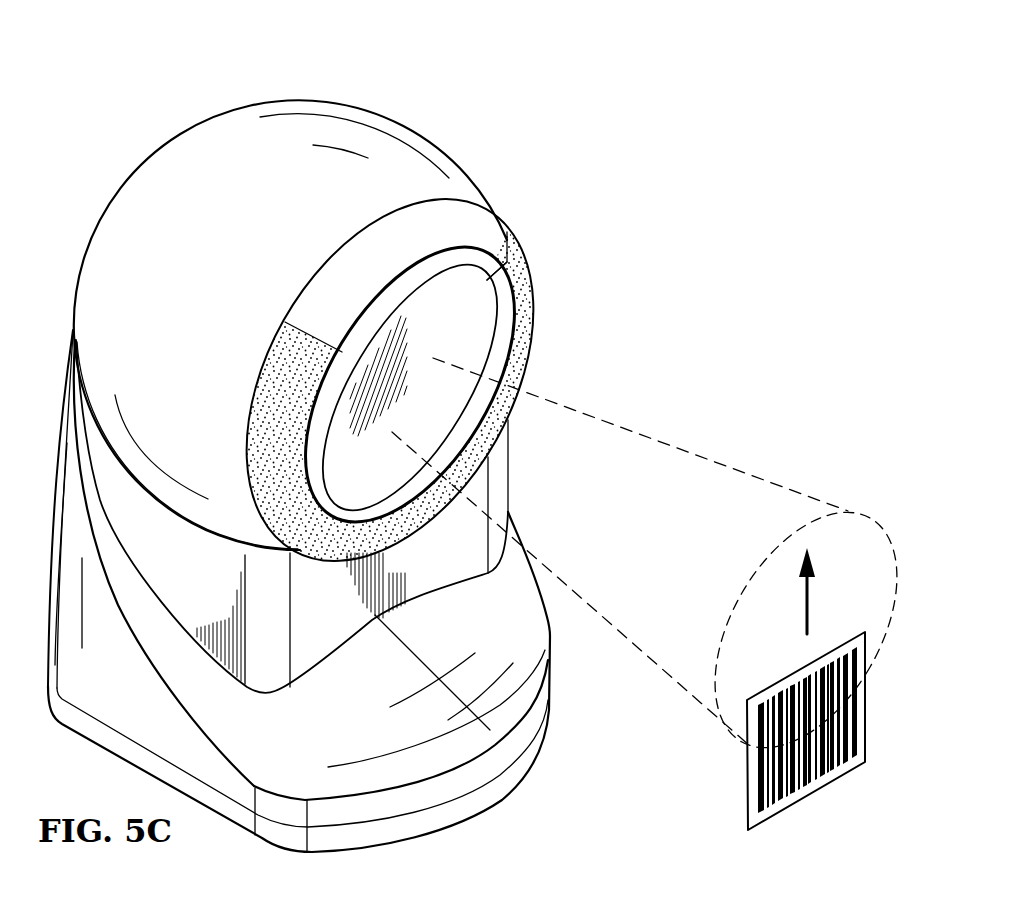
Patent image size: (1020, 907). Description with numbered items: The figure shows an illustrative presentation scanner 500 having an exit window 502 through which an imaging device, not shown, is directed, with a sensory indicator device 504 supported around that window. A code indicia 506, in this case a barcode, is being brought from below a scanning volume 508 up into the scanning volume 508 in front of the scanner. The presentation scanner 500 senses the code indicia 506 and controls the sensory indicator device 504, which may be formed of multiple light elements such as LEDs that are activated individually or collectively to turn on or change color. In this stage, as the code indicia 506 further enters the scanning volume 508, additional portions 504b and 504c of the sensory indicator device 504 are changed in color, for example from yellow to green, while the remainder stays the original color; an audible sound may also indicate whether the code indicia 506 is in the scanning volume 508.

The presentation scanner 500 is at (174, 64).
The exit window 502 is at (488, 364).
The sensory indicator device 504 is at (364, 229).
The additional portion of the sensory indicator device 504b is at (262, 390).
The additional portion of the sensory indicator device 504c is at (524, 347).
The code indicia 506 is at (747, 790).
The scanning volume 508 is at (783, 553).